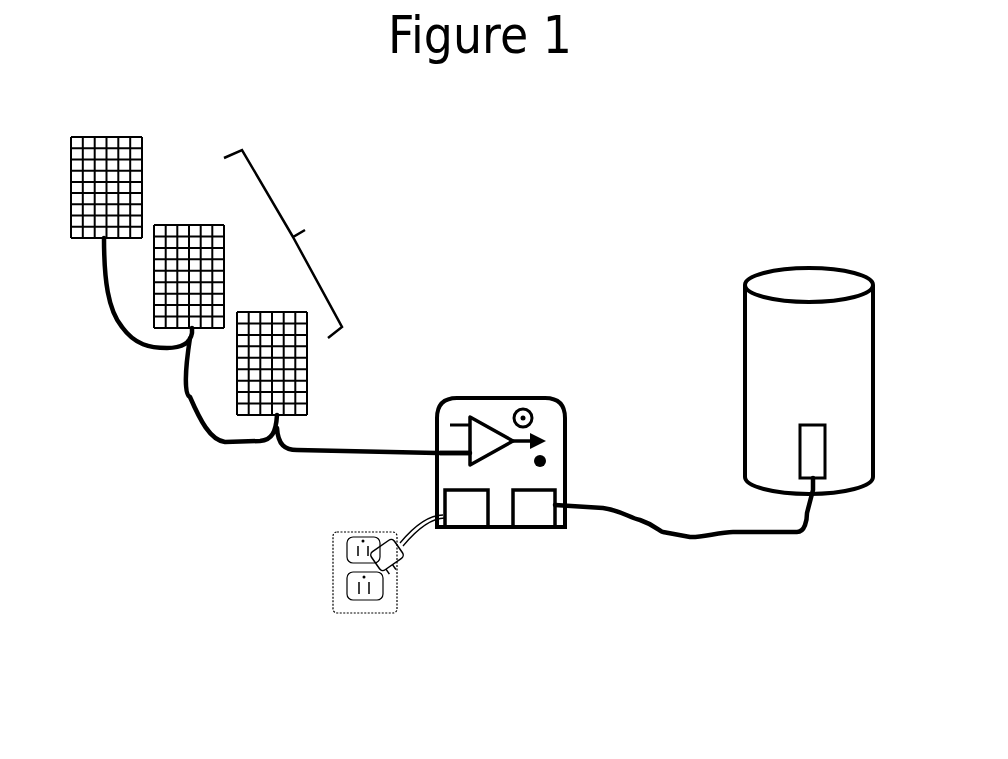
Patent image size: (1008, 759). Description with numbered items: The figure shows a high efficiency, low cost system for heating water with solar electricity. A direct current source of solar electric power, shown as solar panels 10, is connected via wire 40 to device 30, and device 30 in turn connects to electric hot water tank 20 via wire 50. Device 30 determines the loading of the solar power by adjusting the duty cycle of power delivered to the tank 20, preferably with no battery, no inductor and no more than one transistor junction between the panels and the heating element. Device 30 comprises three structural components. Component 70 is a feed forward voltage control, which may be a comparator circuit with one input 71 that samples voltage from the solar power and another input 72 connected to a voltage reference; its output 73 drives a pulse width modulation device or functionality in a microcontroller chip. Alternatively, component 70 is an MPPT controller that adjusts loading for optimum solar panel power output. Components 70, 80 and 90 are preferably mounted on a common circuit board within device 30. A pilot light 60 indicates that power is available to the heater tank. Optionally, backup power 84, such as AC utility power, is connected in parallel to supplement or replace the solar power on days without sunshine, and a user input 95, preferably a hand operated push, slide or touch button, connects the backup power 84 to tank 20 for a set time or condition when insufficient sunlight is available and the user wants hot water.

The solar panels 10 is at (212, 276).
The electric hot water tank 20 is at (813, 283).
The device 30 is at (493, 397).
The wire 40 is at (122, 325).
The wire 50 is at (745, 528).
The pilot light 60 is at (546, 460).
The feed forward voltage control 70 is at (471, 457).
The input 71 is at (450, 452).
The input 72 is at (460, 425).
The output 73 is at (541, 445).
The component 80 is at (467, 510).
The backup power 84 is at (335, 577).
The component 90 is at (540, 510).
The user input 95 is at (527, 410).